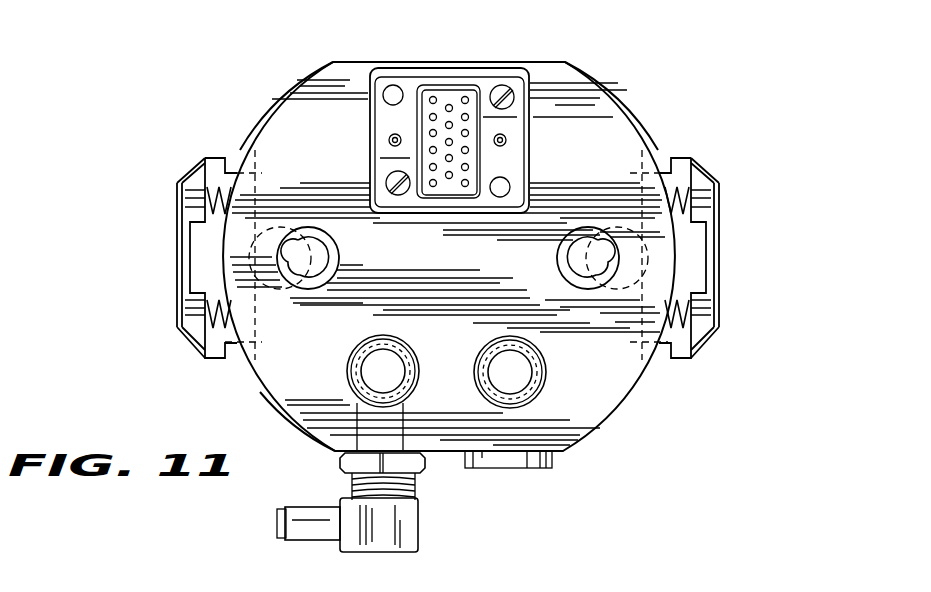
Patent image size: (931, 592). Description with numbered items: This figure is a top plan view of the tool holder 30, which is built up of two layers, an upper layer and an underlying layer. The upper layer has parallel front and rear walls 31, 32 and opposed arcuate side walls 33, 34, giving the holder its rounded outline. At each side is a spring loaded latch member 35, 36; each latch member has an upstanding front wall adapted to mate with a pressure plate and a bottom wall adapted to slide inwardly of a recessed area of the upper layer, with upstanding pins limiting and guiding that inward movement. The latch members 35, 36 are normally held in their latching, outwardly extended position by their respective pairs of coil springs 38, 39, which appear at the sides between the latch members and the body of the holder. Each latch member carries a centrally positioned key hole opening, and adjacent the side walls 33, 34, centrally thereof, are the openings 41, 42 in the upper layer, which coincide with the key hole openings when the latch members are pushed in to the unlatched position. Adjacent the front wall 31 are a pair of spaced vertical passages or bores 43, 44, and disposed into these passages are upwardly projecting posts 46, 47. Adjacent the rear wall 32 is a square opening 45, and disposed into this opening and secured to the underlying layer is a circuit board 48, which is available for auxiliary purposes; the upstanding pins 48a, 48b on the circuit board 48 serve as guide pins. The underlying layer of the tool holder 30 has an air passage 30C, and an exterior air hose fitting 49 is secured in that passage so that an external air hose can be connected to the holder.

The tool holder 30 is at (632, 88).
The air passage 30C is at (352, 438).
The front wall 31 is at (453, 457).
The rear wall 32 is at (450, 62).
The arcuate side wall 33 is at (264, 131).
The arcuate side wall 34 is at (636, 132).
The spring loaded latch member 35 is at (178, 225).
The spring loaded latch member 36 is at (720, 262).
The coil springs 38 is at (208, 317).
The coil springs 39 is at (690, 170).
The opening 41 is at (282, 290).
The opening 42 is at (580, 285).
The vertical passage 43 is at (347, 377).
The vertical passage 44 is at (527, 408).
The square opening 45 is at (513, 78).
The upwardly projecting post 46 is at (407, 394).
The upwardly projecting post 47 is at (478, 375).
The circuit board 48 is at (388, 115).
The guide pin 48a is at (383, 145).
The guide pin 48b is at (508, 146).
The exterior air hose fitting 49 is at (318, 522).